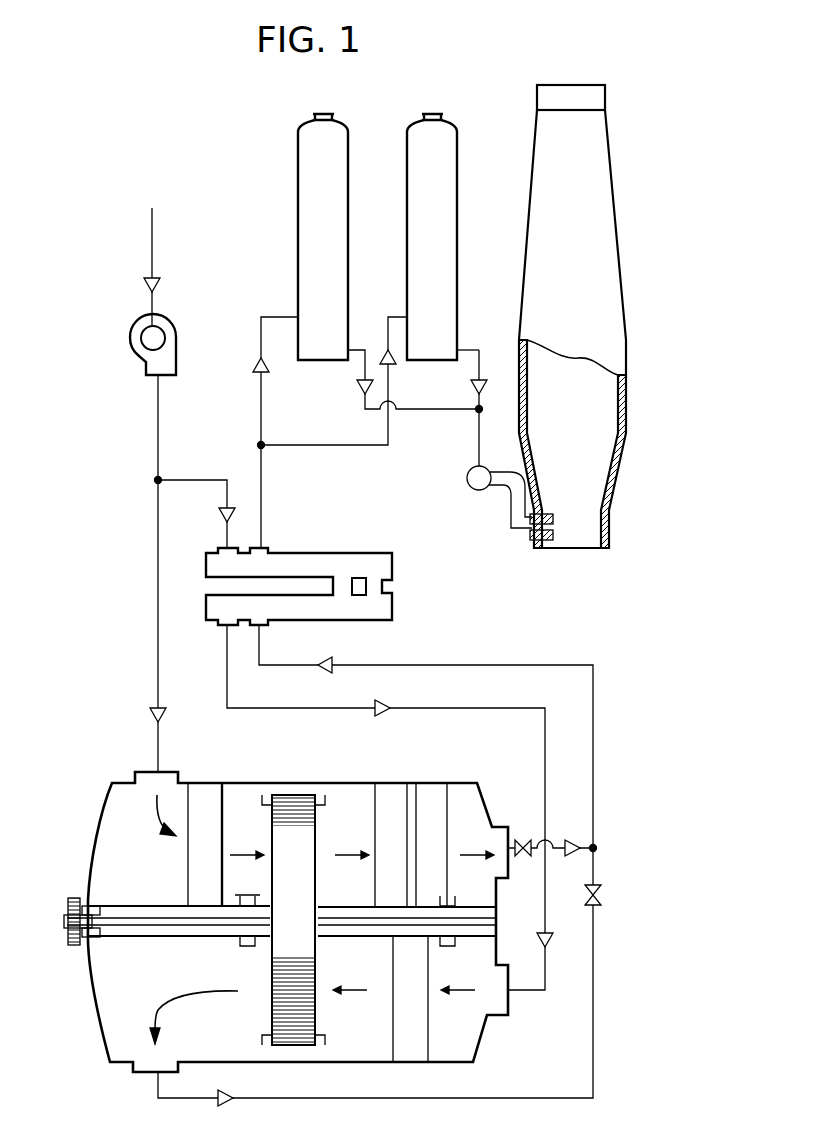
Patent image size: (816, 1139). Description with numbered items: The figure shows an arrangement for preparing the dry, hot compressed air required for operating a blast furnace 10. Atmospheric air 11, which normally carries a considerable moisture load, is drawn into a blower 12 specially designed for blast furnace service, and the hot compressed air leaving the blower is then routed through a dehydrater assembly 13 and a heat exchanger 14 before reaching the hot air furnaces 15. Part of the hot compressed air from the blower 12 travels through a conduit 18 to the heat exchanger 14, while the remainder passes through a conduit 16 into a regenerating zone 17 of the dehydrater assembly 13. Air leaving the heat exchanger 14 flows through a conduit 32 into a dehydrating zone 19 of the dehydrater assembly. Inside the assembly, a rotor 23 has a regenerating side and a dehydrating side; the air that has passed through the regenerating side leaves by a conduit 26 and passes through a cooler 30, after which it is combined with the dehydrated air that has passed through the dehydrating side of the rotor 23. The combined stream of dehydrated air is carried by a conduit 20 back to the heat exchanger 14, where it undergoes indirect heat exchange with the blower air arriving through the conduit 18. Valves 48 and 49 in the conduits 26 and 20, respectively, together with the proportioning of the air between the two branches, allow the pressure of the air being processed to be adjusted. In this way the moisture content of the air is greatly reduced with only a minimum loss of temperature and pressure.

The blast furnace 10 is at (605, 256).
The atmospheric air 11 is at (152, 225).
The blower 12 is at (138, 352).
The dehydrater assembly 13 is at (345, 783).
The heat exchanger 14 is at (310, 565).
The hot air furnaces 15 is at (300, 226).
The conduit 16 is at (158, 620).
The regenerating zone 17 is at (158, 886).
The conduit 18 is at (200, 480).
The dehydrating zone 19 is at (230, 981).
The conduit 20 is at (593, 742).
The rotor 23 is at (305, 963).
The conduit 26 is at (560, 855).
The cooler 30 is at (432, 866).
The conduit 32 is at (432, 710).
The valve 48 is at (525, 840).
The valve 49 is at (600, 900).